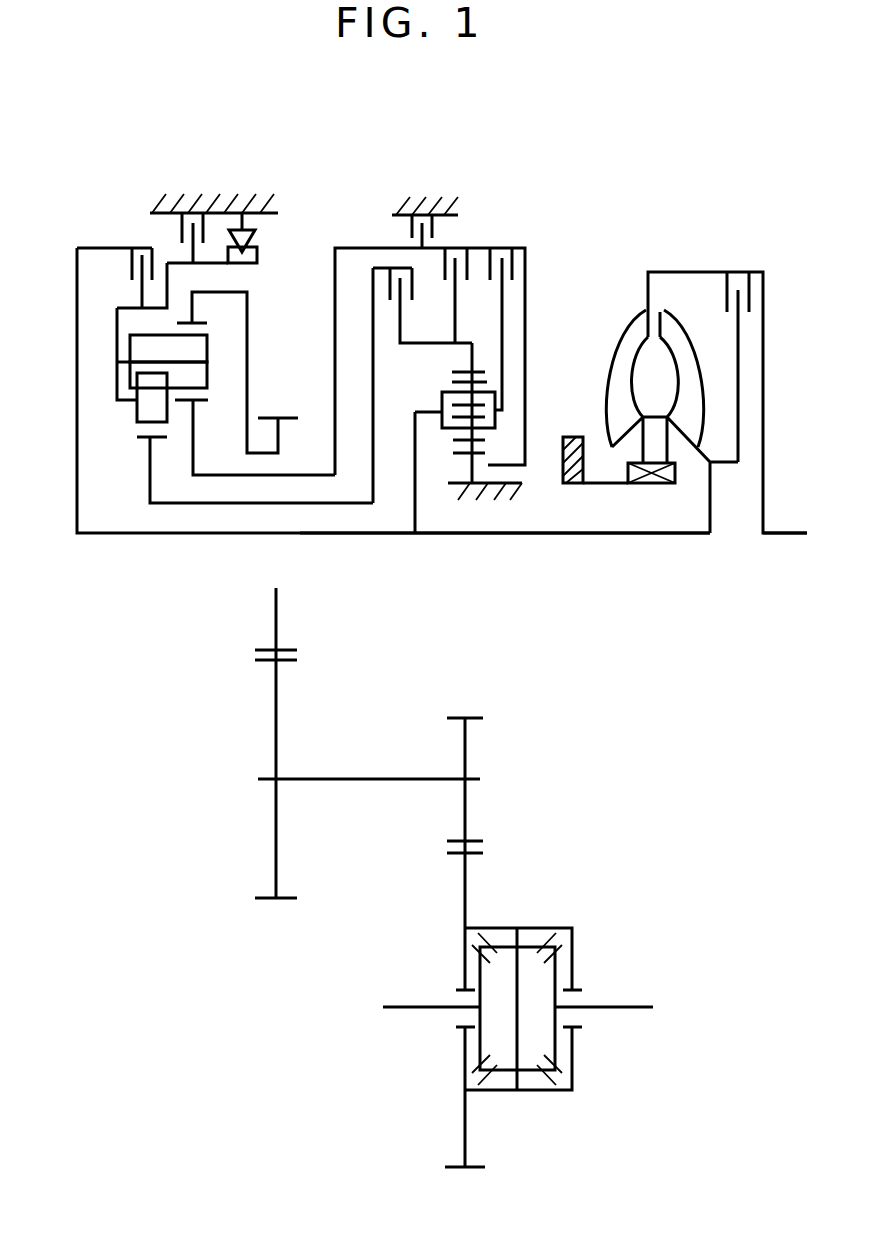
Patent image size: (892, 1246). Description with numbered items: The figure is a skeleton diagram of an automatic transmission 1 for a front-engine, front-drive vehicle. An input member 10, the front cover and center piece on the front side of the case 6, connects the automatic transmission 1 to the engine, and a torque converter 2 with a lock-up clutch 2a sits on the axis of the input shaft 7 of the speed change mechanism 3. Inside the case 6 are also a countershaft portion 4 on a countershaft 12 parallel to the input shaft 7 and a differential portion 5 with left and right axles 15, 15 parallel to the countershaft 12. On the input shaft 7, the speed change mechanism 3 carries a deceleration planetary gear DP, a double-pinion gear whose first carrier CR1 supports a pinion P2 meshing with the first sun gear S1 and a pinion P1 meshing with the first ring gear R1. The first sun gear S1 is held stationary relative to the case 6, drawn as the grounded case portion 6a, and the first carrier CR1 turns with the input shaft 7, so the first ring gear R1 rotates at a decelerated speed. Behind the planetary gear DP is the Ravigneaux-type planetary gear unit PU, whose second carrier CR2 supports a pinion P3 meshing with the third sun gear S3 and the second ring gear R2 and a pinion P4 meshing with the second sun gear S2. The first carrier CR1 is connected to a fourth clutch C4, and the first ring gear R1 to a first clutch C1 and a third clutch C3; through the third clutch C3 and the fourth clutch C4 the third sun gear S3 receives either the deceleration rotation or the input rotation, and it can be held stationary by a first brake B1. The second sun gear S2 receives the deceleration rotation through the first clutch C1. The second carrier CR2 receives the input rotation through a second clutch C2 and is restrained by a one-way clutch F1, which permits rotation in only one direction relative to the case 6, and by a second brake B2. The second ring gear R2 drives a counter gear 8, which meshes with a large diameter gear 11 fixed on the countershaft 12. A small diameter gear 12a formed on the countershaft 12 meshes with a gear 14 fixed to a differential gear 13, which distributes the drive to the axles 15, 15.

The automatic transmission 1 is at (588, 181).
The torque converter 2 is at (661, 262).
The lock-up clutch 2a is at (742, 300).
The speed change mechanism 3 is at (331, 198).
The countershaft portion 4 is at (251, 758).
The differential portion 5 is at (601, 913).
The case 6 is at (155, 208).
The transmission case (fixed portion) 6a is at (507, 487).
The input shaft 7 is at (505, 537).
The counter gear 8 is at (288, 418).
The input member 10 is at (780, 531).
The large diameter gear 11 is at (277, 697).
The countershaft 12 is at (362, 780).
The small diameter gear 12a is at (467, 743).
The differential gear 13 is at (543, 1093).
The gear 14 is at (470, 882).
The axles 15 is at (405, 1013).
The planetary gear unit PU is at (100, 336).
The planetary gear DP is at (489, 346).
The first brake B1 is at (423, 205).
The second brake B2 is at (197, 213).
The one-way clutch F1 is at (242, 213).
The first clutch C1 is at (422, 385).
The second clutch C2 is at (142, 262).
The third clutch C3 is at (457, 280).
The fourth clutch C4 is at (504, 314).
The first ring gear R1 is at (465, 369).
The pinion P1 is at (460, 382).
The pinion P2 is at (460, 436).
The first sun gear S1 is at (468, 455).
The first carrier CR1 is at (495, 418).
The second ring gear R2 is at (247, 308).
The pinion P3 is at (208, 353).
The pinion P4 is at (137, 409).
The second sun gear S2 is at (142, 437).
The third sun gear S3 is at (203, 400).
The second carrier CR2 is at (112, 322).